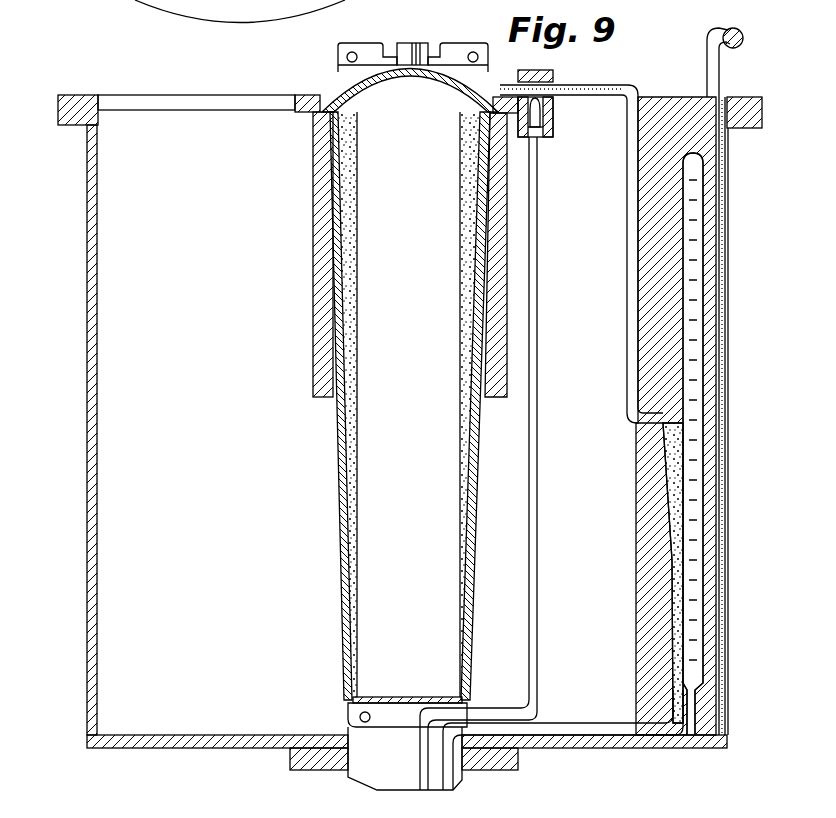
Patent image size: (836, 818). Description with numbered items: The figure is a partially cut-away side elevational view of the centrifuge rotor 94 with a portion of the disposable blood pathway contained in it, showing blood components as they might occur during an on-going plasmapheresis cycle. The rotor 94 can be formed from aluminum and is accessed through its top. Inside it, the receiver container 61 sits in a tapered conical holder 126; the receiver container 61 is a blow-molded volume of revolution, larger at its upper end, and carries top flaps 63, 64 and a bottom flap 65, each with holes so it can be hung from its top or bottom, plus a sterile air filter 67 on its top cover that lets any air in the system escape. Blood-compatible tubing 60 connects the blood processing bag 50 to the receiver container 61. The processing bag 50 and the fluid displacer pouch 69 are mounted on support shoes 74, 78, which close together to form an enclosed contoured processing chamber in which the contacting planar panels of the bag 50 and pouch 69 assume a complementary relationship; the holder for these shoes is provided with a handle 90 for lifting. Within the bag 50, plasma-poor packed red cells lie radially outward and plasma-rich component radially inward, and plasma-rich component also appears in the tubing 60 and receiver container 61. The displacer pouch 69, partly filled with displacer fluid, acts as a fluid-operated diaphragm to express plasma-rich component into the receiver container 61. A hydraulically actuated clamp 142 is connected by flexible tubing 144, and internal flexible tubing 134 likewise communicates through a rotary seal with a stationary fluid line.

The centrifuge rotor 94 is at (87, 383).
The tapered conical holder 126 is at (313, 350).
The receiver container 61 is at (418, 400).
The top flap 63 is at (350, 43).
The top flap 64 is at (457, 47).
The sterile air filter 67 is at (405, 43).
The blood-compatible tubing 60 is at (607, 83).
The hydraulically actuated clamp 142 is at (553, 113).
The flexible tubing 144 is at (538, 335).
The support shoe 78 is at (657, 198).
The support shoe 74 is at (710, 212).
The fluid displacer pouch 69 is at (690, 622).
The blood processing bag 50 is at (672, 478).
The handle 90 is at (723, 27).
The bottom flap 65 is at (352, 723).
The flexible tubing 134 is at (575, 730).